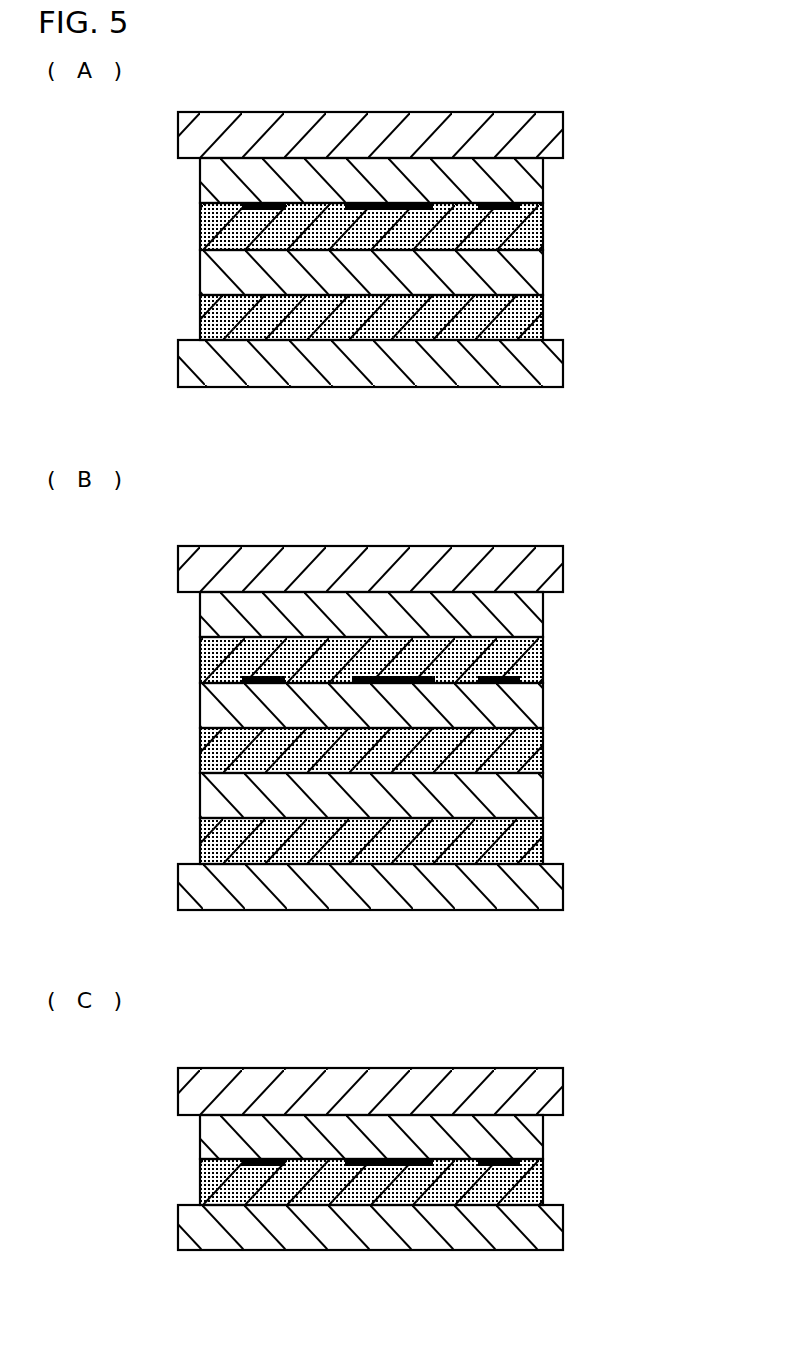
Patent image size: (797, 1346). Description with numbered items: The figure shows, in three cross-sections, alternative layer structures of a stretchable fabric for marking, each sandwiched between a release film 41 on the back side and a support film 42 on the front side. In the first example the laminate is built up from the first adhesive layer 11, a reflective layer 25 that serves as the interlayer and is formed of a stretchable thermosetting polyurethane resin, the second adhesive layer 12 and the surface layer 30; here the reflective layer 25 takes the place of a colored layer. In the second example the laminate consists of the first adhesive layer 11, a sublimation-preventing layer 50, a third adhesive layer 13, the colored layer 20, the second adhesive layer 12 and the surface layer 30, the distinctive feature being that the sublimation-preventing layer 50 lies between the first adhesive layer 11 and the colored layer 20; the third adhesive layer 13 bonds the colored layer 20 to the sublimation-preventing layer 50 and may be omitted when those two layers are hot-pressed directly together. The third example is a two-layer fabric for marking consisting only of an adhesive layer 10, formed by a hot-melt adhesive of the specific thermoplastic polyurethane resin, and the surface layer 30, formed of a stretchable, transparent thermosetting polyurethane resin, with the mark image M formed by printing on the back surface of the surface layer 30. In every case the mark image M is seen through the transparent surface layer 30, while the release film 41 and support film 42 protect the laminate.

The support film 42 is at (550, 128).
The release film 41 is at (552, 372).
The surface layer 30 is at (527, 187).
The second adhesive layer 12 is at (537, 228).
The first adhesive layer 11 is at (532, 310).
The reflective layer 25 is at (532, 270).
The colored layer 20 is at (535, 708).
The third adhesive layer 13 is at (537, 744).
The sublimation-preventing layer 50 is at (535, 798).
The adhesive layer 10 is at (540, 1178).
The mark image M is at (395, 207).